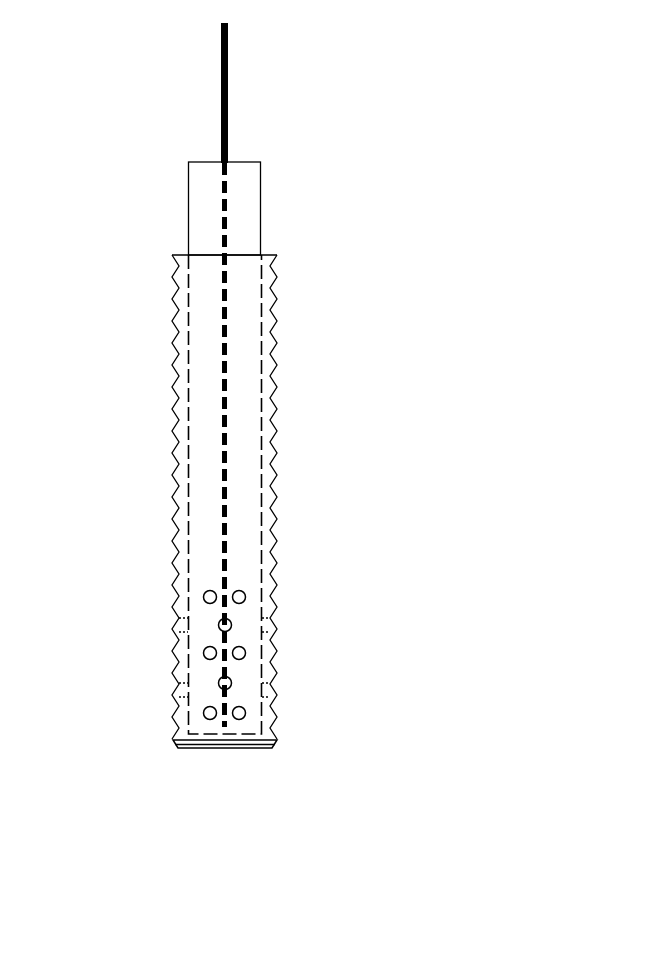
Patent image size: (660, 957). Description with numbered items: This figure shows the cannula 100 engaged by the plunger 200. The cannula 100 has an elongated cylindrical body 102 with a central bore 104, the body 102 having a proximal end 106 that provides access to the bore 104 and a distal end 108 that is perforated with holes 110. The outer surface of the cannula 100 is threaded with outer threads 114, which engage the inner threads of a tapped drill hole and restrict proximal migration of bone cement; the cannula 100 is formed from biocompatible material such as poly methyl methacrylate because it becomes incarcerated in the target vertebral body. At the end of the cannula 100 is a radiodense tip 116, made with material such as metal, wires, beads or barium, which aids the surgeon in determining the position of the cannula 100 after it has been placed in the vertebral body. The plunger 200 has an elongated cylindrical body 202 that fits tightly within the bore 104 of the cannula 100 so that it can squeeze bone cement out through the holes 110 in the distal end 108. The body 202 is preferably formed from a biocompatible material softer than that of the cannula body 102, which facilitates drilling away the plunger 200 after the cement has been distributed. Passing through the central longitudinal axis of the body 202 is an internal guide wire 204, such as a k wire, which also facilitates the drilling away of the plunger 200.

The cannula 100 is at (405, 350).
The elongated cylindrical body 102 is at (278, 252).
The central bore 104 is at (237, 388).
The proximal end 106 is at (268, 233).
The distal end 108 is at (248, 766).
The holes 110 is at (246, 660).
The outer threads 114 is at (280, 558).
The radiodense tip 116 is at (198, 745).
The plunger 200 is at (155, 188).
The elongated cylindrical body 202 is at (250, 167).
The internal guide wire 204 is at (218, 123).